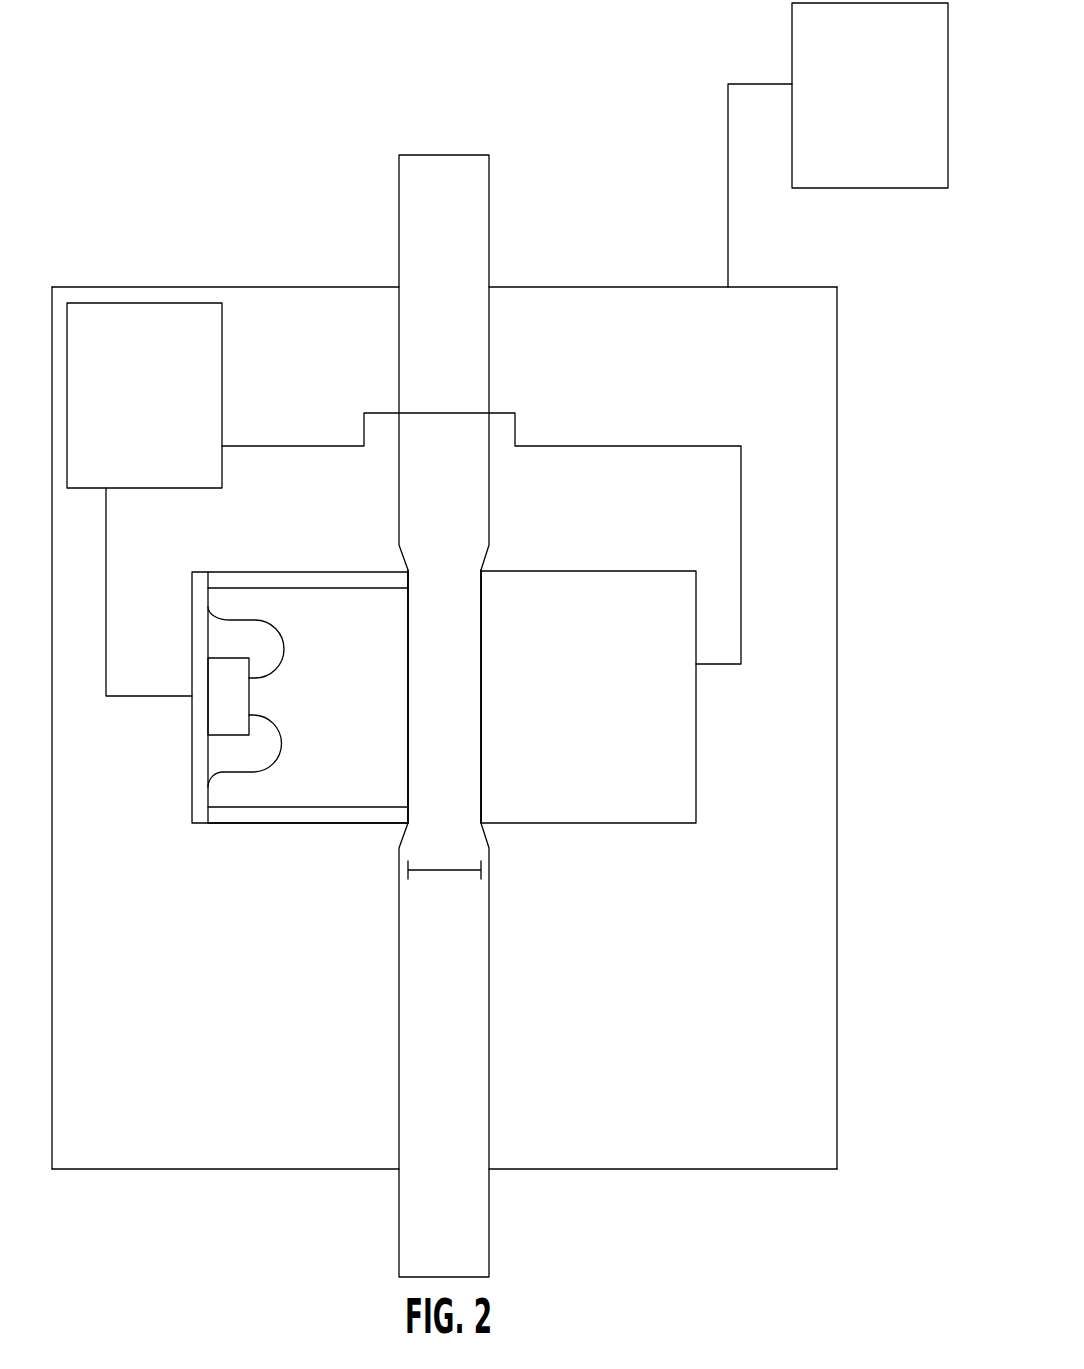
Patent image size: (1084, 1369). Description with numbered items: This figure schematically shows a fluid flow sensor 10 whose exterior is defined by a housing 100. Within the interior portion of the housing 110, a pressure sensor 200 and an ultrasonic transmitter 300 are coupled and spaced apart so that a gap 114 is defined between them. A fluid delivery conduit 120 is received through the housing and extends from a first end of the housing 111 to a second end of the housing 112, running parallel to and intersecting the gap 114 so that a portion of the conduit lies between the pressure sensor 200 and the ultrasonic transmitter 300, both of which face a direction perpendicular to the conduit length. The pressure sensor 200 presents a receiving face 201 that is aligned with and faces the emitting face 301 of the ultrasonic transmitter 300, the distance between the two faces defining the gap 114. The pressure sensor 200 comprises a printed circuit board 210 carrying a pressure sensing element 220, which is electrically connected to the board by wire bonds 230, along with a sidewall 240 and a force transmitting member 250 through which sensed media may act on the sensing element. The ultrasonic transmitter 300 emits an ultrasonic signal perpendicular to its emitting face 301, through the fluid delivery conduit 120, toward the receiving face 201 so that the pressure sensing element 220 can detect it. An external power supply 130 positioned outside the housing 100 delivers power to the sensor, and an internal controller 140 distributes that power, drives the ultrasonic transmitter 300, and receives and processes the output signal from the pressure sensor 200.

The fluid flow sensor 10 is at (635, 1178).
The housing 100 is at (117, 1169).
The interior portion of the housing 110 is at (444, 728).
The first end of the housing 111 is at (582, 287).
The second end of the housing 112 is at (570, 1169).
The gap 114 is at (453, 870).
The fluid delivery conduit 120 is at (399, 928).
The power supply 130 is at (890, 114).
The internal controller 140 is at (163, 414).
The pressure sensor 200 is at (233, 553).
The receiving face 201 is at (408, 668).
The printed circuit board 210 is at (192, 643).
The pressure sensing element 220 is at (208, 714).
The wire bonds 230 is at (270, 622).
The sidewall 240 is at (257, 823).
The force transmitting member 250 is at (341, 684).
The ultrasonic transmitter 300 is at (610, 718).
The emitting face 301 is at (481, 665).